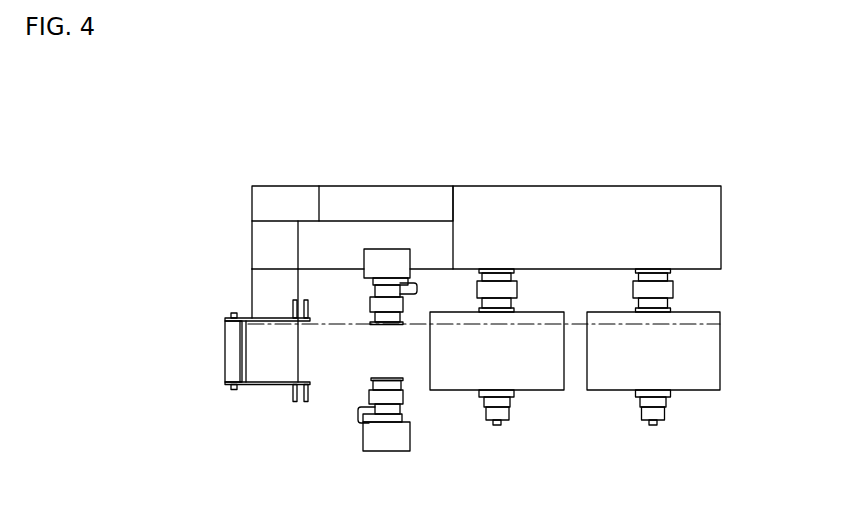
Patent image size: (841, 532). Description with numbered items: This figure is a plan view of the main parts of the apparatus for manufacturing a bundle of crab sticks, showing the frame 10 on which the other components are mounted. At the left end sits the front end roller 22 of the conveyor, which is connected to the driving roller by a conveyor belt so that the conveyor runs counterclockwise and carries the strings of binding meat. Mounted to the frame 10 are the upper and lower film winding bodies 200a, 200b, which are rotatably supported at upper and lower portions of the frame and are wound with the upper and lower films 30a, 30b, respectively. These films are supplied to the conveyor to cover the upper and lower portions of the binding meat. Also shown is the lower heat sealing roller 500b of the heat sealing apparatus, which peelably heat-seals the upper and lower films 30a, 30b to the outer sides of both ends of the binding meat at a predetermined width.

The frame 10 is at (491, 183).
The front end roller 22 is at (222, 350).
The upper film 30a is at (665, 378).
The lower film 30b is at (467, 378).
The upper film winding body 200a is at (695, 390).
The lower film winding body 200b is at (509, 390).
The lower heat sealing roller 500b is at (372, 384).